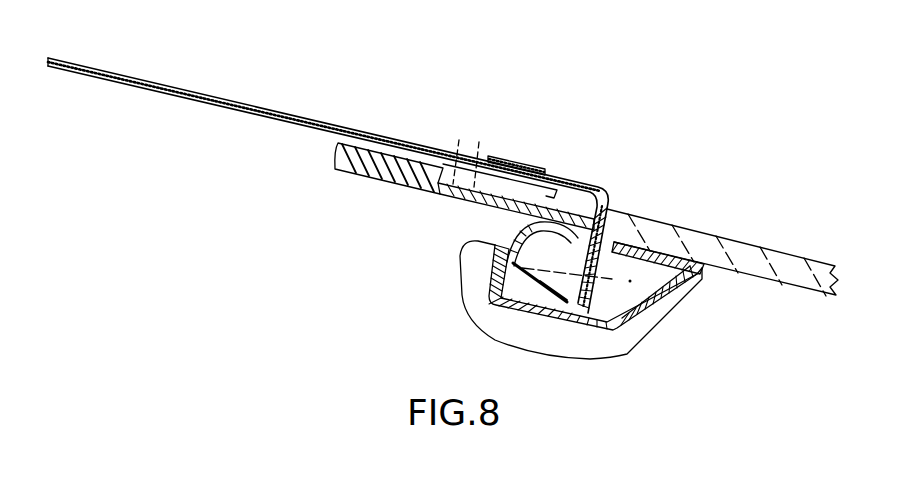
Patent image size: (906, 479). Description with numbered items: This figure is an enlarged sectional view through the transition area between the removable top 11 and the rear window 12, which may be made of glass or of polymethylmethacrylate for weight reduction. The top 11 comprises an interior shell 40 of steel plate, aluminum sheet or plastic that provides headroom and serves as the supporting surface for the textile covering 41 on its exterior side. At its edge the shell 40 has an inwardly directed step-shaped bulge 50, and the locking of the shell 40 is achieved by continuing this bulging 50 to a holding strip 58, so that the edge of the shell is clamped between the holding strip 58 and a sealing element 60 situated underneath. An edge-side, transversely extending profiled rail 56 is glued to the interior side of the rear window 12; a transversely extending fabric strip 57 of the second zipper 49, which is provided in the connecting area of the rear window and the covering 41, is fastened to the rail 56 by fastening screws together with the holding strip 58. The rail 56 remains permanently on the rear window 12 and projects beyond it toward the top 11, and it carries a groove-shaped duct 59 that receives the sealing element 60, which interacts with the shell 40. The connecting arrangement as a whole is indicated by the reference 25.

The removable top 11 is at (279, 114).
The rear window 12 is at (803, 262).
The mounting assembly 25 is at (242, 273).
The interior shell 40 is at (355, 152).
The textile covering 41 is at (174, 89).
The second zipper 49 is at (518, 159).
The step-shaped bulge 50 is at (483, 194).
The profiled rail 56 is at (650, 246).
The fabric strip 57 is at (613, 211).
The holding strip 58 is at (598, 287).
The groove-shaped duct 59 is at (547, 293).
The sealing element 60 is at (489, 296).